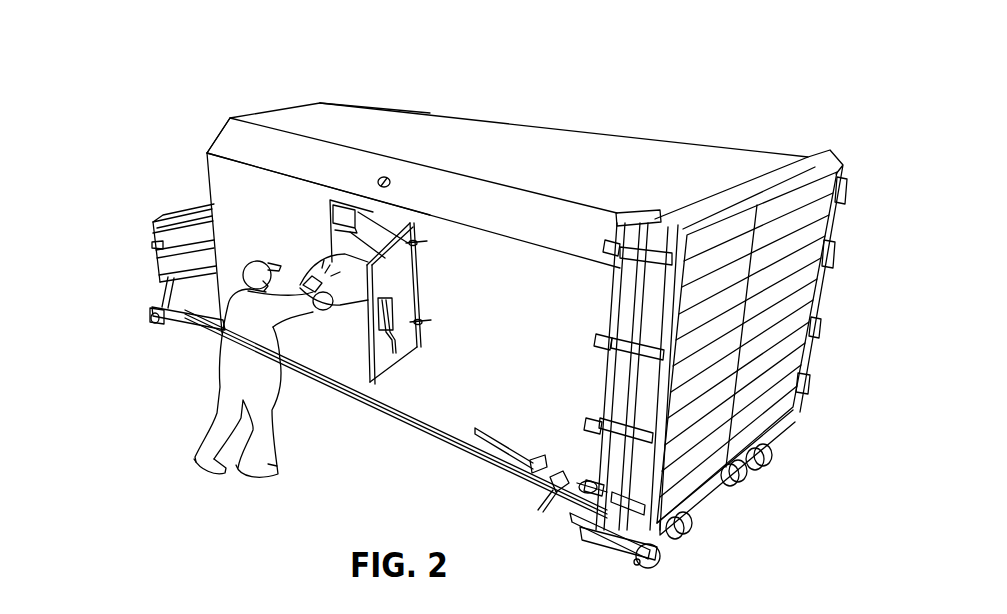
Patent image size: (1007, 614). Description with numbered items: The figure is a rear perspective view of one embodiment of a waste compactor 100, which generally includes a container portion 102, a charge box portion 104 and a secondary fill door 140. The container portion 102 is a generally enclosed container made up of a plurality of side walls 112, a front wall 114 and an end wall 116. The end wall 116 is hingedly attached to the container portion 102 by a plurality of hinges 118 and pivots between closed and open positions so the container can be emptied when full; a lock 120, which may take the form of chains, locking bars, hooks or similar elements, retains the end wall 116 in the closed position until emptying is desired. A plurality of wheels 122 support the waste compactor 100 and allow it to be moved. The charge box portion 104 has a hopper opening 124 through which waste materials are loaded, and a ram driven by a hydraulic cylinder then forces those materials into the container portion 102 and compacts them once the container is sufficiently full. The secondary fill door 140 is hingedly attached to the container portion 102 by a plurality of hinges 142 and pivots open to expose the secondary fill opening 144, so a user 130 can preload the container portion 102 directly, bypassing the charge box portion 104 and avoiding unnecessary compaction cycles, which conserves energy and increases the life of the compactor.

The waste compactor 100 is at (600, 64).
The container portion 102 is at (613, 166).
The charge box portion 104 is at (200, 297).
The side walls 112 is at (350, 115).
The front wall 114 is at (222, 132).
The end wall 116 is at (773, 263).
The hinges 118 is at (808, 386).
The lock 120 is at (567, 487).
The wheels 122 is at (156, 326).
The hopper opening 124 is at (203, 210).
The user 130 is at (253, 382).
The secondary fill door 140 is at (397, 282).
The hinges 142 is at (417, 243).
The secondary fill opening 144 is at (363, 213).